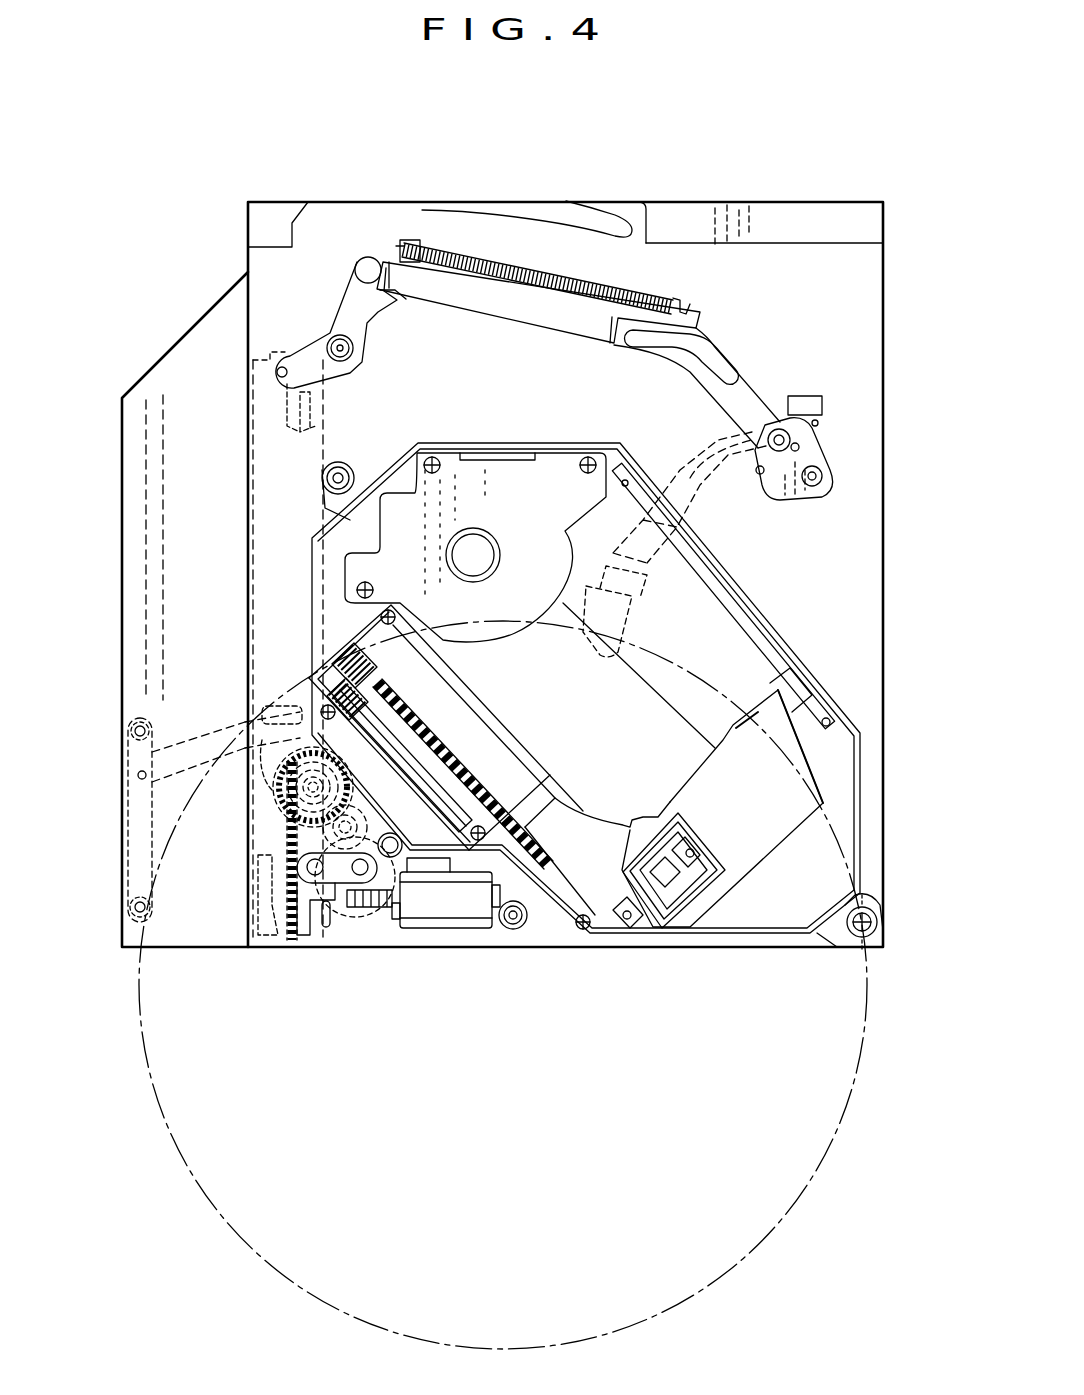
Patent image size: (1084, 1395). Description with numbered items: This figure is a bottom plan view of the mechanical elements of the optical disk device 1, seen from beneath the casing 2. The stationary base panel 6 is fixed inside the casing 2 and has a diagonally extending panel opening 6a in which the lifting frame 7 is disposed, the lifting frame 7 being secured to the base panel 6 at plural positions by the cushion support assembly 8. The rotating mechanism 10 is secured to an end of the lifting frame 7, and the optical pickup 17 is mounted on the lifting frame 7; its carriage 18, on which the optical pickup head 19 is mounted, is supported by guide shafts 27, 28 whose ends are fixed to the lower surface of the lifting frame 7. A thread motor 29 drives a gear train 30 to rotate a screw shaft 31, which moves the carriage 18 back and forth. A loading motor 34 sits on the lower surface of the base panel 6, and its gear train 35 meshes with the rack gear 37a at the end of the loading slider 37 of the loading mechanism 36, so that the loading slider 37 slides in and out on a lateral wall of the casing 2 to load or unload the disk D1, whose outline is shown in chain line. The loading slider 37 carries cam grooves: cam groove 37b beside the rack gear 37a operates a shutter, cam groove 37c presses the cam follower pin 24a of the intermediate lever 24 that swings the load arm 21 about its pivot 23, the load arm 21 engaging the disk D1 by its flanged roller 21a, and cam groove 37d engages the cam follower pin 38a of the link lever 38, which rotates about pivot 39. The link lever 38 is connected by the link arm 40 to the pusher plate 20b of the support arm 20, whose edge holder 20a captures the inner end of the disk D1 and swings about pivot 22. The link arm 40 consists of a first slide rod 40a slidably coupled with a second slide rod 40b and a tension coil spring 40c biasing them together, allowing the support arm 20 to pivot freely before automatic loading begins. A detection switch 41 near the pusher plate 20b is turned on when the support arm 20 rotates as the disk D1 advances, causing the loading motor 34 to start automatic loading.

The optical disk device 1 is at (656, 191).
The casing 2 is at (884, 600).
The stationary base panel 6 is at (866, 290).
The panel opening 6a is at (770, 622).
The lifting frame 7 is at (682, 717).
The cushion support assembly 8 is at (372, 492).
The rotating mechanism 10 is at (513, 638).
The optical pickup 17 is at (767, 809).
The carriage 18 is at (752, 852).
The optical pickup head 19 is at (683, 862).
The support arm 20 is at (690, 478).
The edge holder 20a is at (640, 620).
The pusher plate 20b is at (812, 448).
The load arm 21 is at (138, 843).
The flanged roller 21a is at (135, 908).
The pivot 22 is at (810, 484).
The pivot 23 is at (135, 731).
The intermediate lever 24 is at (185, 745).
The cam follower pin 24a is at (290, 712).
The guide shaft 27 is at (485, 745).
The guide shaft 28 is at (748, 640).
The thread motor 29 is at (378, 743).
The gear train 30 is at (352, 662).
The screw shaft 31 is at (490, 797).
The loading motor 34 is at (427, 905).
The gear train 35 is at (300, 855).
The loading mechanism 36 is at (296, 518).
The loading slider 37 is at (268, 578).
The rack gear 37a is at (298, 950).
The cam groove 37b is at (258, 922).
The cam groove 37c is at (272, 798).
The cam groove 37d is at (290, 410).
The link lever 38 is at (350, 320).
The cam follower pin 38a is at (277, 373).
The pivot 39 is at (346, 352).
The link arm 40 is at (587, 337).
The first slide rod 40a is at (558, 320).
The second slide rod 40b is at (745, 385).
The tension coil spring 40c is at (488, 302).
The detection switch 41 is at (800, 395).
The disk D1 is at (758, 1255).